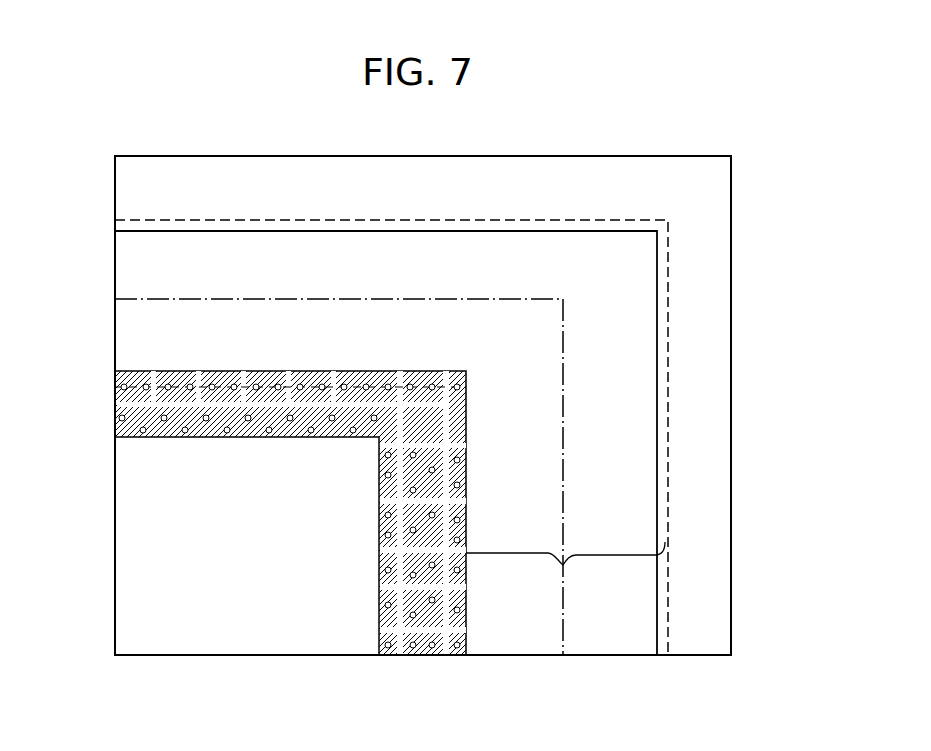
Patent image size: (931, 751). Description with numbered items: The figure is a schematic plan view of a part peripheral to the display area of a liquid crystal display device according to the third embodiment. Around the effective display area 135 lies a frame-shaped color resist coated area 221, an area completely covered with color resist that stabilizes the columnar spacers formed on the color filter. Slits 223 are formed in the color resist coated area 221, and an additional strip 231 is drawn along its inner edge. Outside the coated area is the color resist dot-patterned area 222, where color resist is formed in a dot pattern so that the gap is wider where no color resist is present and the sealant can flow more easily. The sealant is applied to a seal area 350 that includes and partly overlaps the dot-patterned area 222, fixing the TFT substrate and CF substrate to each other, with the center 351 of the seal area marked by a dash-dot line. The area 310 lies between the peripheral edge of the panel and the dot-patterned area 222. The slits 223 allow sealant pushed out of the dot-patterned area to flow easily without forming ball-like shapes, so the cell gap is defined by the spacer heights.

The effective display area 135 is at (380, 688).
The color resist coated area 221 is at (255, 550).
The color resist dot-patterned area 222 is at (657, 688).
The slits 223 is at (118, 403).
The sealant 231 is at (118, 432).
The area between the peripheral edge and the color resist dot-patterned area 310 is at (660, 688).
The seal area 350 is at (563, 567).
The center of the seal area 351 is at (563, 425).